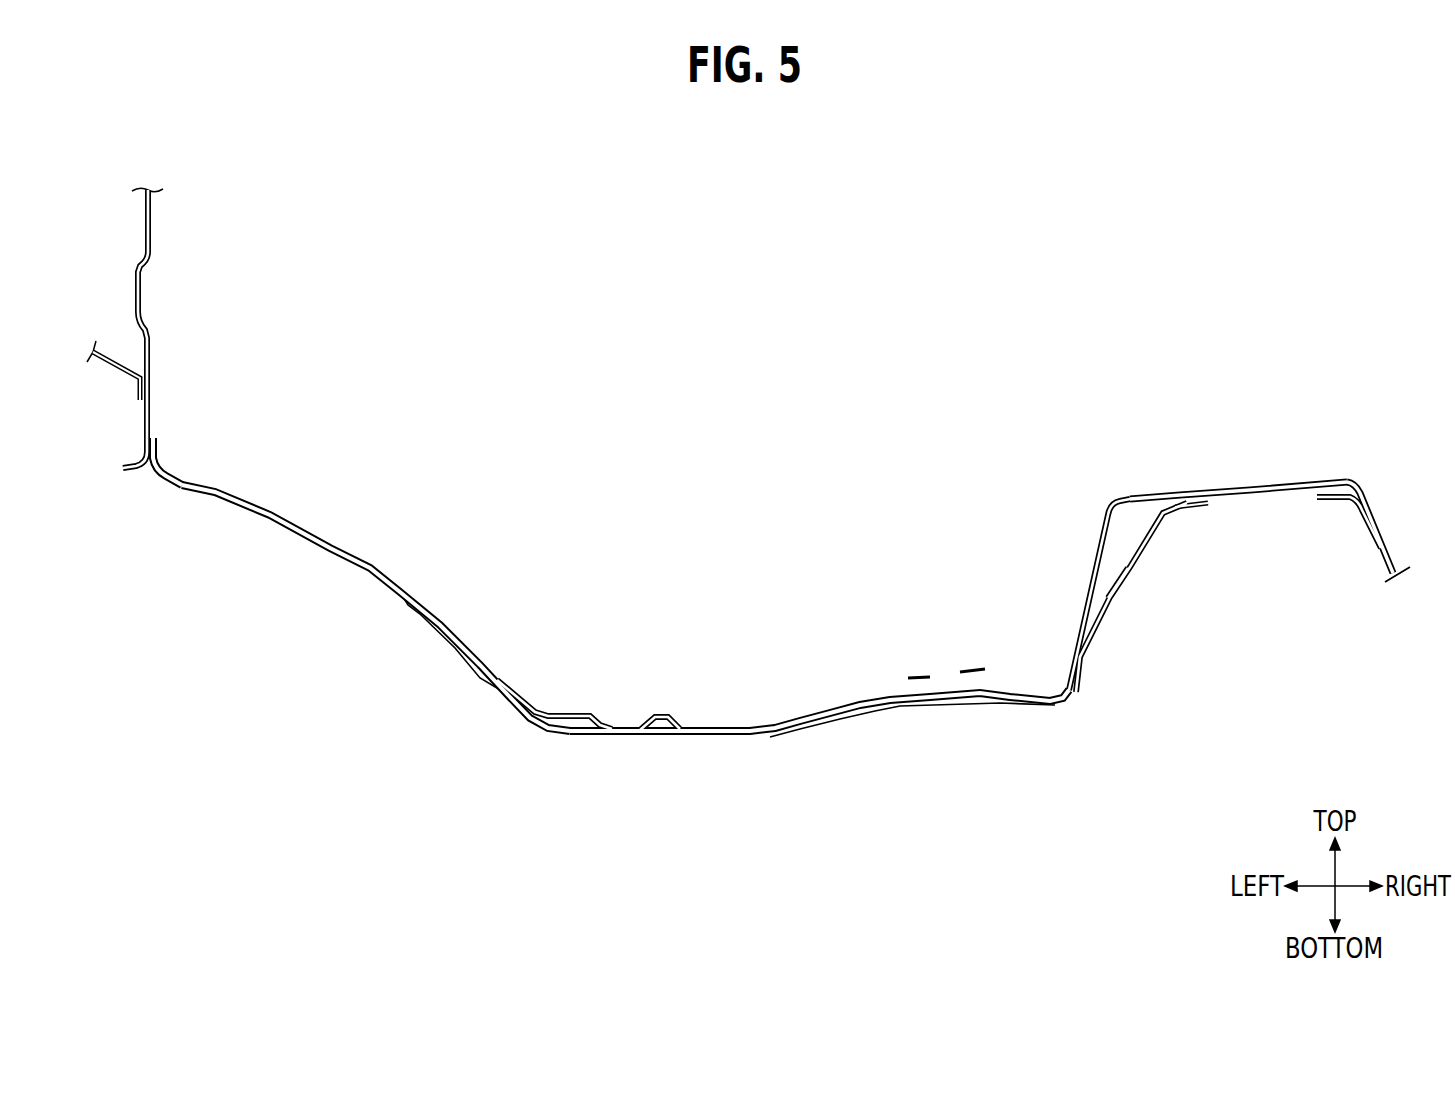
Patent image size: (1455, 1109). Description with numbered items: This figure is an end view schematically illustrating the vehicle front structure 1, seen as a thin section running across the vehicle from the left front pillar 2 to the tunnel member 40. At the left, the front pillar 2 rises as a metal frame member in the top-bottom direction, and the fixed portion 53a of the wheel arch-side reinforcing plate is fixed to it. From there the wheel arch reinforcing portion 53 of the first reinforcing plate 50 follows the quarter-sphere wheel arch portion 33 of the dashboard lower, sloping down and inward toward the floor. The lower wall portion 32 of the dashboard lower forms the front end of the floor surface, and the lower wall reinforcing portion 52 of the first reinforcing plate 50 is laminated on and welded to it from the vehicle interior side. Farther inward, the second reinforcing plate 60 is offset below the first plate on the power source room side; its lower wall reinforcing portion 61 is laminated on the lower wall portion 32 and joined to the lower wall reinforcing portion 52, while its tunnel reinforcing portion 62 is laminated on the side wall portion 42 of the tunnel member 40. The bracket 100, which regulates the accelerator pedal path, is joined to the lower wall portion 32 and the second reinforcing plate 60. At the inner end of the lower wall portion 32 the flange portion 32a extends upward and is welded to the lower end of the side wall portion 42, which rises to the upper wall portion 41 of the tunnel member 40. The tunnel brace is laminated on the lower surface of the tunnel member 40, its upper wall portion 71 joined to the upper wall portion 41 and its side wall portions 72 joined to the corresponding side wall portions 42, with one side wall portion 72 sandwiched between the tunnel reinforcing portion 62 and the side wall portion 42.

The vehicle front structure 1 is at (898, 263).
The front pillar 2 is at (144, 288).
The lower wall portion 32 is at (692, 736).
The flange portion 32a is at (1072, 667).
The wheel arch portion 33 is at (332, 565).
The tunnel member 40 is at (1158, 435).
The upper wall portion 41 is at (1233, 487).
The side wall portion 42 is at (1107, 551).
The first reinforcing plate 50 is at (521, 420).
The lower wall reinforcing portion 52 is at (617, 722).
The wheel arch reinforcing portion 53 is at (352, 545).
The fixed portion 53a is at (152, 450).
The second reinforcing plate 60 is at (1087, 722).
The lower wall reinforcing portion 61 is at (998, 703).
The tunnel reinforcing portion 62 is at (1107, 646).
The upper wall portion 71 is at (1203, 510).
The side wall portion 72 is at (1120, 561).
The bracket 100 is at (975, 668).